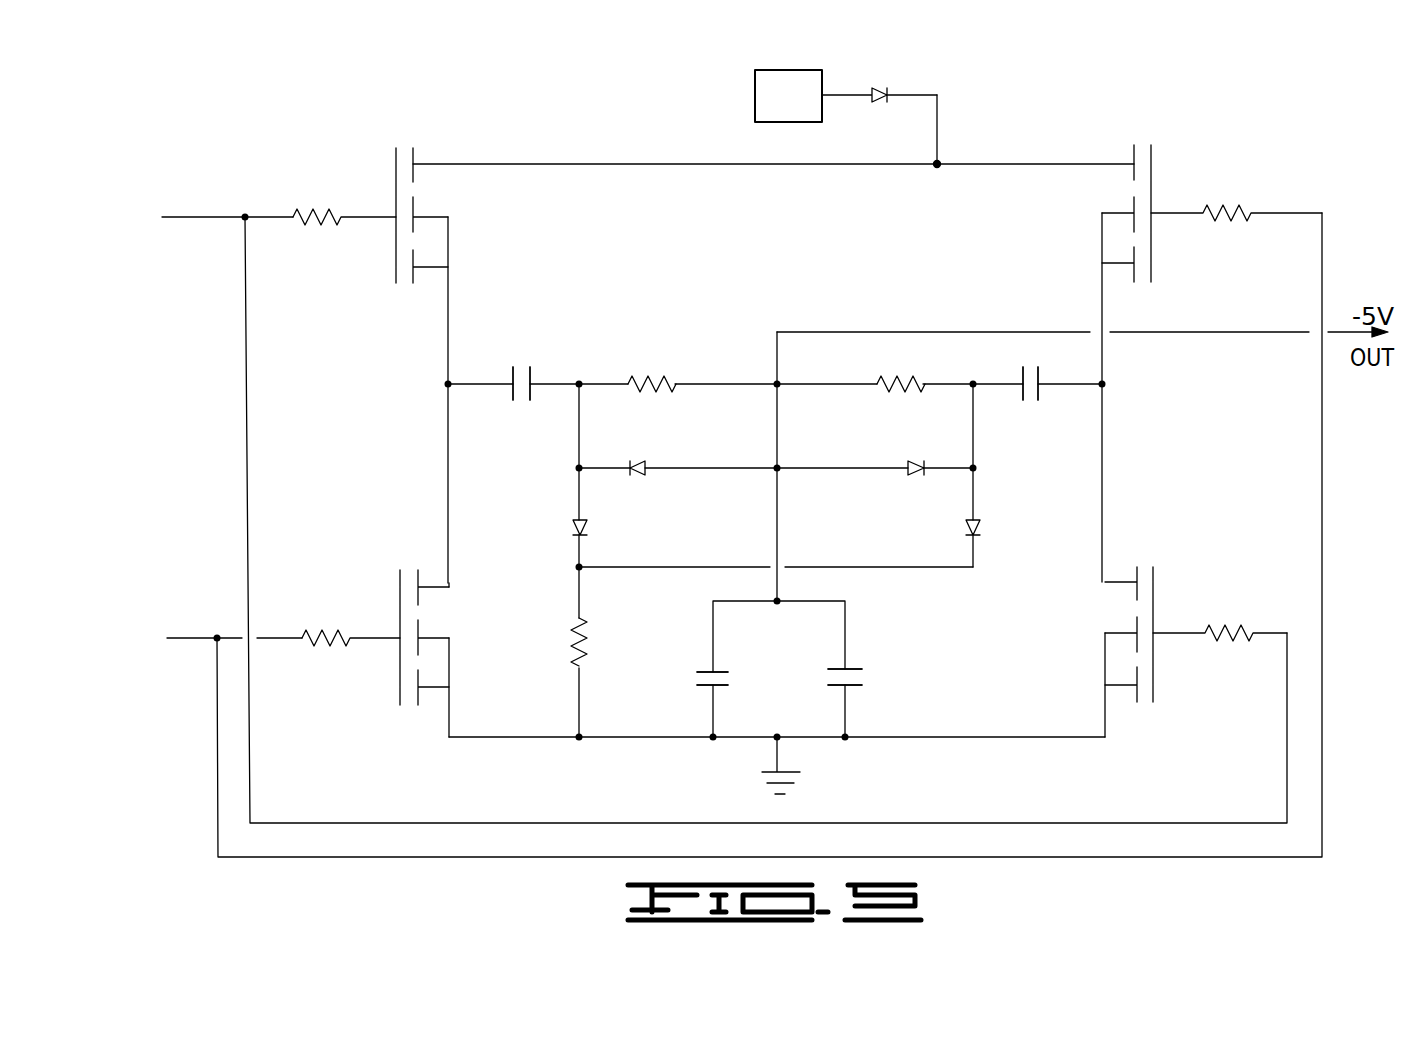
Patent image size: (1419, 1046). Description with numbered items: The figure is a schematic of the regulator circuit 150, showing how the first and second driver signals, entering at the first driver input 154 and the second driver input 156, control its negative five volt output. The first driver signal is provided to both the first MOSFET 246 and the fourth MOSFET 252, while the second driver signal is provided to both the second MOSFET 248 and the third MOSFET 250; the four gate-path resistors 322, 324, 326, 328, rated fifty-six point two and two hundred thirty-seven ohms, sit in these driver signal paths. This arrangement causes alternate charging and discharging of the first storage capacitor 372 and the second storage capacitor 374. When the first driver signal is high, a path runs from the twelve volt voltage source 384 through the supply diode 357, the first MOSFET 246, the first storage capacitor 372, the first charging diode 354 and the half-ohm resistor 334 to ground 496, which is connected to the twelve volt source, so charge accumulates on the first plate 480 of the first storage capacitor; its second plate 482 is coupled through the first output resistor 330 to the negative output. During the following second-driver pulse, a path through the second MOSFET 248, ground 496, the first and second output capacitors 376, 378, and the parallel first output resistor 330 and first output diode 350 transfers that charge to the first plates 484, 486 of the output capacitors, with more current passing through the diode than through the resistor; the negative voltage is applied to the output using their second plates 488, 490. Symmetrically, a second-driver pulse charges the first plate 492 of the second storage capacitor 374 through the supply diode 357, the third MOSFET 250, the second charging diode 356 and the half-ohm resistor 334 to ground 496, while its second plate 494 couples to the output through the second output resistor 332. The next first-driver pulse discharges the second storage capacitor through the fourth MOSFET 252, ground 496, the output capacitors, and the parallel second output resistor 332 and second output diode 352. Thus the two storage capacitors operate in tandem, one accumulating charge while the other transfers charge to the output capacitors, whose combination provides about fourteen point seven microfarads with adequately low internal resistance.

The regulator circuit 150 is at (1168, 118).
The first drive signal input DR1 154 is at (203, 220).
The second drive signal input DR2 156 is at (185, 636).
The M1 MOSFET 246 is at (395, 258).
The M2 MOSFET 248 is at (400, 586).
The M3 MOSFET 250 is at (1155, 247).
The M4 MOSFET 252 is at (1157, 578).
The R31 resistor 322 is at (313, 220).
The R32 resistor 324 is at (323, 645).
The R33 resistor 326 is at (1228, 222).
The R34 resistor 328 is at (1222, 642).
The R35 resistor 330 is at (665, 388).
The R36 resistor 332 is at (902, 388).
The R37 resistor 334 is at (574, 637).
The D8 diode 350 is at (636, 463).
The D9 diode 352 is at (916, 463).
The D10 diode 354 is at (575, 524).
The D11 diode 356 is at (980, 522).
The D12 diode 357 is at (880, 92).
The C8 capacitor 372 is at (547, 366).
The C9 capacitor 374 is at (1053, 372).
The C10 capacitor 376 is at (698, 679).
The C11 capacitor 378 is at (863, 678).
The +12V voltage source 384 is at (755, 103).
The first plate 480 is at (512, 400).
The second plate 482 is at (533, 400).
The first plate 484 is at (706, 690).
The first plate 486 is at (850, 690).
The second plate 488 is at (705, 670).
The second plate 490 is at (852, 668).
The first plate 492 is at (1040, 400).
The second plate 494 is at (1020, 400).
The ground 496 is at (780, 755).